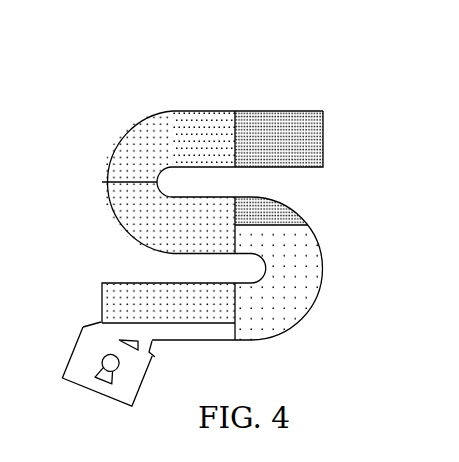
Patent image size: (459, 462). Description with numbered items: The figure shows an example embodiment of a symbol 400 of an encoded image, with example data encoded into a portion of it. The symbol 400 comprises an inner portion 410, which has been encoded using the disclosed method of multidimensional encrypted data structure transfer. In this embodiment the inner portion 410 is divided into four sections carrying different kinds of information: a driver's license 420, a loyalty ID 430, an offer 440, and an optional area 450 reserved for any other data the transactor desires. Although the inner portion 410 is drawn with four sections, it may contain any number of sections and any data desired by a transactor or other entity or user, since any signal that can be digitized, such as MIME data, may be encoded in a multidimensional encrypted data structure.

The symbol 400 is at (209, 177).
The inner portion 410 is at (127, 144).
The driver's license 420 is at (177, 115).
The loyalty ID 430 is at (118, 222).
The offer 440 is at (305, 302).
The optional area 450 is at (293, 117).